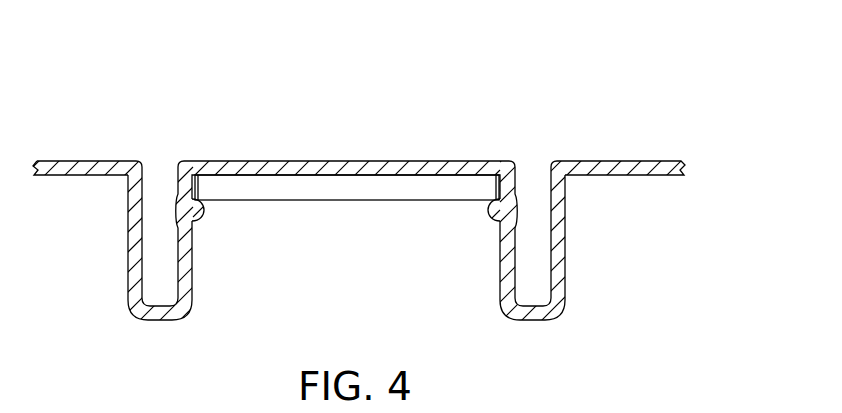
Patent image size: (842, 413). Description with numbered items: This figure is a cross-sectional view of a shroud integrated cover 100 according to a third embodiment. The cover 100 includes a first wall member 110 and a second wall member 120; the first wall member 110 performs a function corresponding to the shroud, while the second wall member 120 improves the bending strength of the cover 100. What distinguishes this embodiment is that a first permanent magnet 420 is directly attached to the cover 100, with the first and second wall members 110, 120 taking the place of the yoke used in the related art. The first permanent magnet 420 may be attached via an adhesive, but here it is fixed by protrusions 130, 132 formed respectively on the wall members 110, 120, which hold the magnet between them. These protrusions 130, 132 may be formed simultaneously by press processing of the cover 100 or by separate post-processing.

The cover 100 is at (90, 146).
The first wall member 110 is at (137, 263).
The second wall member 120 is at (562, 248).
The protrusion 130 is at (200, 214).
The protrusion 132 is at (495, 218).
The first permanent magnet 420 is at (375, 190).